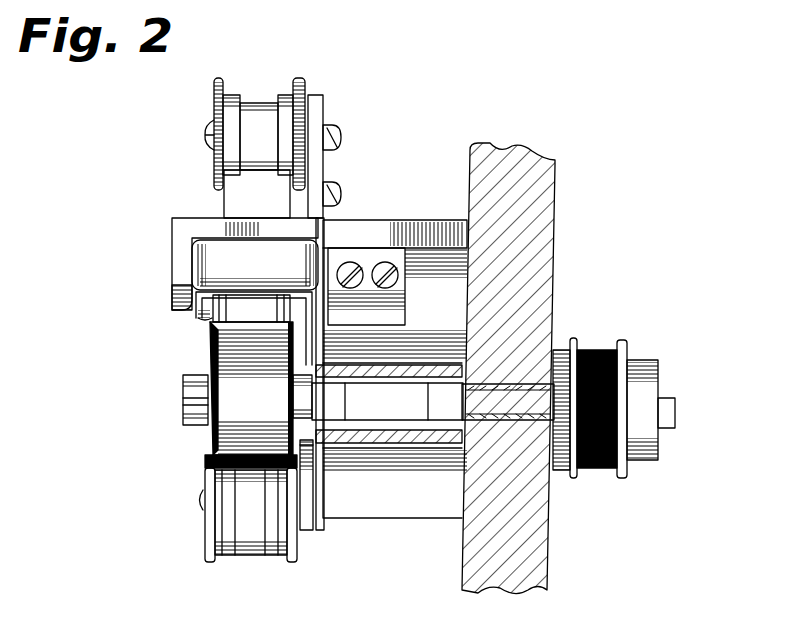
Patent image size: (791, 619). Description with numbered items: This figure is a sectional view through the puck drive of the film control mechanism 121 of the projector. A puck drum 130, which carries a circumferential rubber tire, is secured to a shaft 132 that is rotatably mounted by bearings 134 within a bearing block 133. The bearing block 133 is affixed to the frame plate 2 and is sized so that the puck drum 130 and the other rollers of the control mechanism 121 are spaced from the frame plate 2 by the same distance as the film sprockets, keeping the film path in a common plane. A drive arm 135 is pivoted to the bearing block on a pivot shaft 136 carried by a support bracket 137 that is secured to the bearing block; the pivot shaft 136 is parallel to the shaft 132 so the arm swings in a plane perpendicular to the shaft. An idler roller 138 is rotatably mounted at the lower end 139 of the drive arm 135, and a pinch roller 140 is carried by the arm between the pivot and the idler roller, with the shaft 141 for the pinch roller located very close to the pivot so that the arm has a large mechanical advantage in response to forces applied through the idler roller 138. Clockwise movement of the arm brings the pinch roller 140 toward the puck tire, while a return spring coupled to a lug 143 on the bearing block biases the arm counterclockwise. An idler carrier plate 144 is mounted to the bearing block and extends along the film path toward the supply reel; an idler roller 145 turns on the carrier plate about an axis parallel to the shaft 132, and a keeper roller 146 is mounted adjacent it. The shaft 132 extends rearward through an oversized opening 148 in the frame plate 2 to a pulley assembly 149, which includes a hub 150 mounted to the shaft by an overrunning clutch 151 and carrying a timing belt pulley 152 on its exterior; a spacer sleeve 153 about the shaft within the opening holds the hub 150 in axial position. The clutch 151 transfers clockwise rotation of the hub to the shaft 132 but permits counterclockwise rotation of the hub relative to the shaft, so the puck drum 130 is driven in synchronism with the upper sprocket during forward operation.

The frame plate 2 is at (530, 172).
The control mechanism 121 is at (142, 185).
The puck drum 130 is at (246, 395).
The shaft 132 is at (305, 401).
The bearing block 133 is at (412, 511).
The bearings 134 is at (387, 404).
The drive arm 135 is at (307, 458).
The pivot shaft 136 is at (180, 290).
The support bracket 137 is at (172, 248).
The idler roller 138 is at (250, 545).
The lower end 139 is at (312, 533).
The pinch roller 140 is at (215, 338).
The shaft 141 is at (200, 317).
The lug 143 is at (328, 242).
The idler carrier plate 144 is at (340, 165).
The idler roller 145 is at (288, 78).
The keeper roller 146 is at (213, 197).
The oversized opening 148 is at (512, 385).
The pulley assembly 149 is at (645, 352).
The hub 150 is at (656, 360).
The overrunning clutch 151 is at (658, 450).
The timing belt pulley 152 is at (598, 350).
The spacer sleeve 153 is at (574, 340).